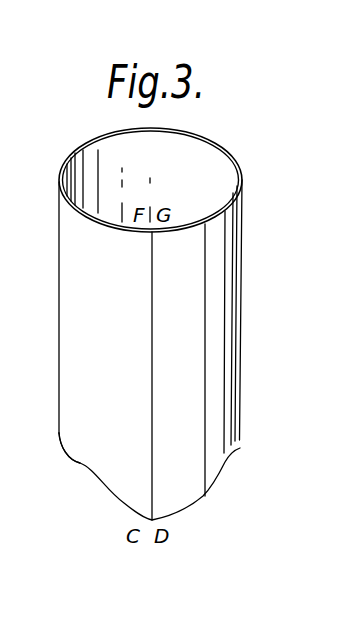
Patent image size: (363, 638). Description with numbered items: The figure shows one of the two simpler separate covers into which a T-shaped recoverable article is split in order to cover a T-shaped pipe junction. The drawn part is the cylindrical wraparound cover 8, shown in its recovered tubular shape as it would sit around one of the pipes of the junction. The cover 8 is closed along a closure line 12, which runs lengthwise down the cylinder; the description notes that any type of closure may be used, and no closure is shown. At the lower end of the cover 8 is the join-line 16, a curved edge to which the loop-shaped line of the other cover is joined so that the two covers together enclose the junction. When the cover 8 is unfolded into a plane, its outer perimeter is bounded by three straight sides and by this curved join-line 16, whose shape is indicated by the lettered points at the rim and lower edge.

The cylindrical wraparound cover 8 is at (207, 299).
The closure line 12 is at (153, 373).
The join-line 16 is at (80, 463).